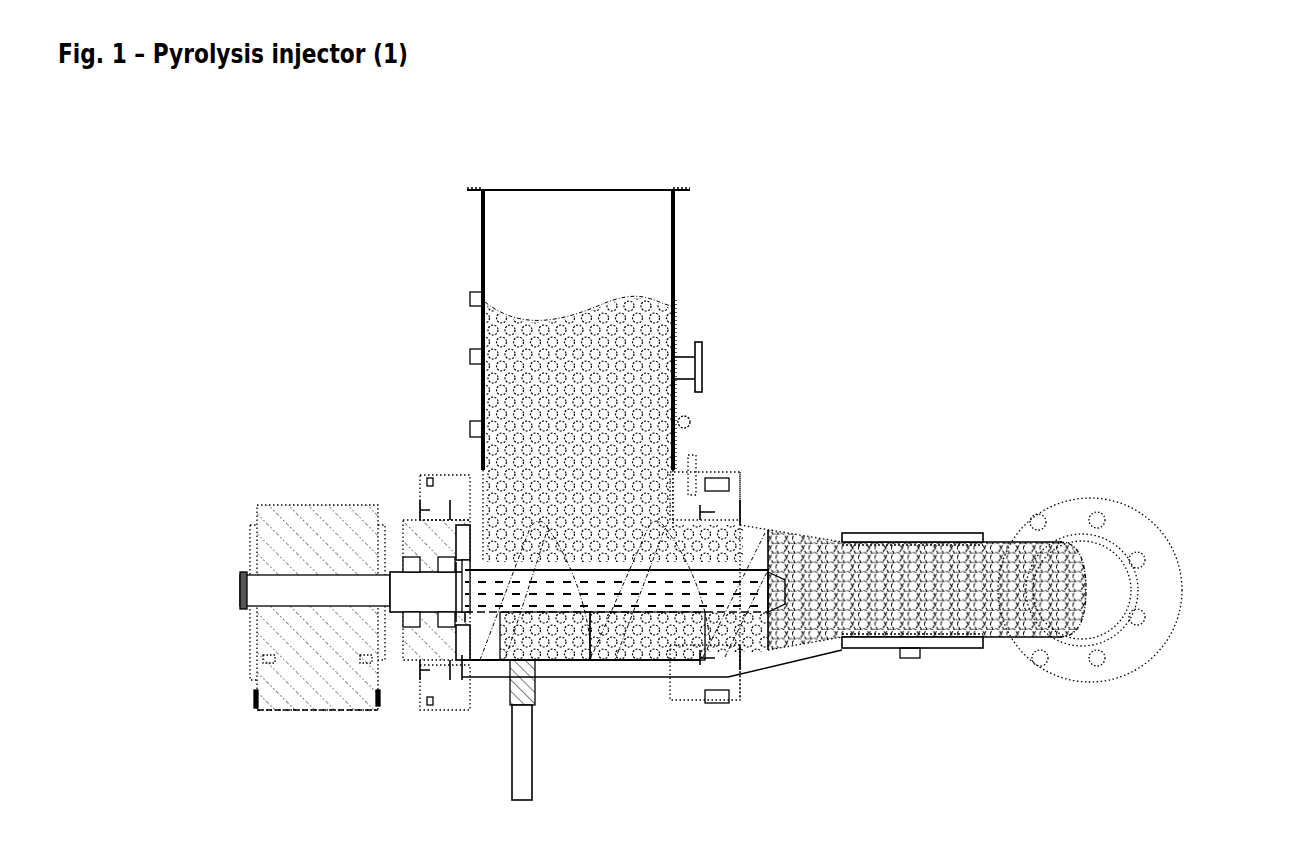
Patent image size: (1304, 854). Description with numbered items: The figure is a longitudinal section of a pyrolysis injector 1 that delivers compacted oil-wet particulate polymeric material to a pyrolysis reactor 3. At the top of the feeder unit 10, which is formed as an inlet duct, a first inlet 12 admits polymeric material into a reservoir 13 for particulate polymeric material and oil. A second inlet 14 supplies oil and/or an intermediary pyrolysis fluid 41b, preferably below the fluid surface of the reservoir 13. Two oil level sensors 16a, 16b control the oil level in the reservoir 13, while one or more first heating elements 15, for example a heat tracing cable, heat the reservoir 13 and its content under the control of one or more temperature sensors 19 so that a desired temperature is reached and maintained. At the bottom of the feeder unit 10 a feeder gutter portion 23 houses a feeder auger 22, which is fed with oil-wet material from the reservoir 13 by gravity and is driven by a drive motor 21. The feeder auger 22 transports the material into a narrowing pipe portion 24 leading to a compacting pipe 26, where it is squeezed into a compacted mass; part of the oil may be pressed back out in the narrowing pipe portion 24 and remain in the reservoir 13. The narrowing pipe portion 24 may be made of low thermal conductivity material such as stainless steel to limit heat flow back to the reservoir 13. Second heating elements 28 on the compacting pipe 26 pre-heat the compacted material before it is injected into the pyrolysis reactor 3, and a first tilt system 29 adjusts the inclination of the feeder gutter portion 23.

The pyrolysis injector 1 is at (813, 140).
The feeder unit 10 is at (675, 255).
The first inlet 12 is at (580, 188).
The reservoir 13 is at (675, 303).
The second inlet 14 is at (704, 366).
The intermediary pyrolysis fluid 41b is at (723, 367).
The first heating elements 15 is at (690, 418).
The oil level sensor 16a is at (470, 298).
The oil level sensor 16b is at (470, 356).
The temperature sensors 19 is at (470, 428).
The drive motor for feeder auger 21 is at (330, 512).
The feeder auger 22 is at (430, 717).
The feeder gutter portion 23 is at (596, 680).
The narrowing pipe portion 24 is at (792, 688).
The compacting pipe 26 is at (1024, 654).
The second heating elements 28 is at (882, 534).
The first tilt system 29 is at (508, 722).
The pyrolysis reactor 3 is at (1057, 498).